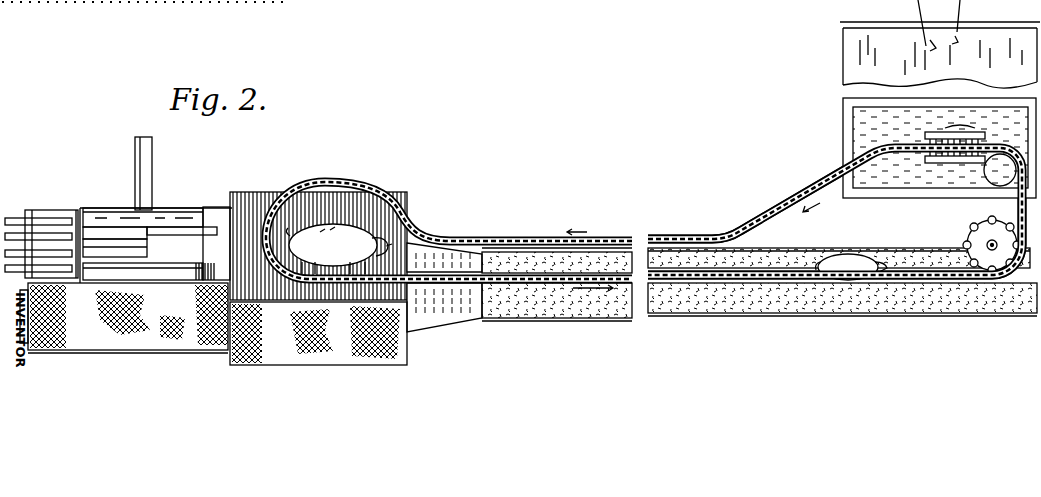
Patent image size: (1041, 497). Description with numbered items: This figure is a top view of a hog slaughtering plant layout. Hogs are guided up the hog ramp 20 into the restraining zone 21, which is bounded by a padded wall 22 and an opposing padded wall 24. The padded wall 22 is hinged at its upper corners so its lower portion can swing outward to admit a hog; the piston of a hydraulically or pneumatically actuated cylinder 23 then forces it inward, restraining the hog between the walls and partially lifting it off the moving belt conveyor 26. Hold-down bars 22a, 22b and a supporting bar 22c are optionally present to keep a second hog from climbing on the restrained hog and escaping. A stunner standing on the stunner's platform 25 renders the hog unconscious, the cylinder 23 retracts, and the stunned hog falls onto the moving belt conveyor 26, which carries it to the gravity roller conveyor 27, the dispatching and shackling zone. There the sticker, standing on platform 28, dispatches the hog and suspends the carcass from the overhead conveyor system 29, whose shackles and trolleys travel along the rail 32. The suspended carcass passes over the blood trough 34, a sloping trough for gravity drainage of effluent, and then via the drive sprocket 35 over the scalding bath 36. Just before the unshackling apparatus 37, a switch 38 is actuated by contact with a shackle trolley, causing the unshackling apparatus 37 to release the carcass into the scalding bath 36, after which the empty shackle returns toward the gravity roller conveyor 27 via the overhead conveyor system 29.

The hog ramp 20 is at (14, 212).
The restraining zone 21 is at (148, 262).
The padded wall 22 is at (165, 210).
The hold-down bar 22a is at (115, 237).
The hold-down bar 22b is at (110, 258).
The supporting bar 22c is at (152, 232).
The cylinder 23 is at (135, 153).
The padded wall 24 is at (153, 275).
The stunner's platform 25 is at (130, 330).
The moving belt conveyor 26 is at (210, 235).
The gravity roller conveyor 27 is at (250, 205).
The platform 28 is at (318, 335).
The overhead conveyor system 29 is at (328, 180).
The rail 32 is at (535, 238).
The blood trough 34 is at (832, 250).
The drive sprocket 35 is at (964, 234).
The scalding bath 36 is at (843, 42).
The unshackling apparatus 37 is at (924, 133).
The switch 38 is at (1000, 152).